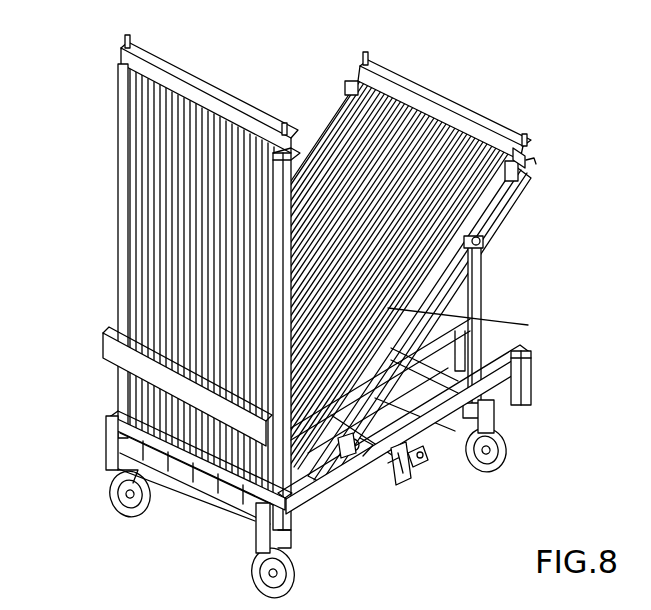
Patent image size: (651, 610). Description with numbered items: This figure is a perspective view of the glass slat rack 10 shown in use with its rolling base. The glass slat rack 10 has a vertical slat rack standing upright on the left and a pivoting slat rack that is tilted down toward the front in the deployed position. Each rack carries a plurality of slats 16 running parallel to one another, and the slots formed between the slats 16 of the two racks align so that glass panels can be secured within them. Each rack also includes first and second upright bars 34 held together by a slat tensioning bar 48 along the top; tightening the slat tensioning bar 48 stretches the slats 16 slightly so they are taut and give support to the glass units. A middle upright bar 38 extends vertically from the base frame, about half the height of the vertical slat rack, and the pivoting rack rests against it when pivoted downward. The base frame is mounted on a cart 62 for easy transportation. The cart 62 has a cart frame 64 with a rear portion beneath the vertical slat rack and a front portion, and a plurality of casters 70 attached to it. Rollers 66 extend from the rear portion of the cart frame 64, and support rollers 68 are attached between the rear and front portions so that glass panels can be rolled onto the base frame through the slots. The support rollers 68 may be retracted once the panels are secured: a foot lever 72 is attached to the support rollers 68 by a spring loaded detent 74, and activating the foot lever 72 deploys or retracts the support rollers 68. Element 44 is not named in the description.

The glass slat rack 10 is at (304, 322).
The slats 16 is at (135, 125).
The upright bar 34 is at (115, 185).
The middle upright bar 38 is at (465, 290).
The panel side bar 44 is at (485, 190).
The slat tensioning bar 48 is at (197, 84).
The cart 62 is at (304, 459).
The cart frame 64 is at (310, 508).
The rollers 66 is at (182, 470).
The support rollers 68 is at (360, 438).
The casters 70 is at (105, 490).
The foot lever 72 is at (455, 455).
The spring loaded detent 74 is at (420, 445).